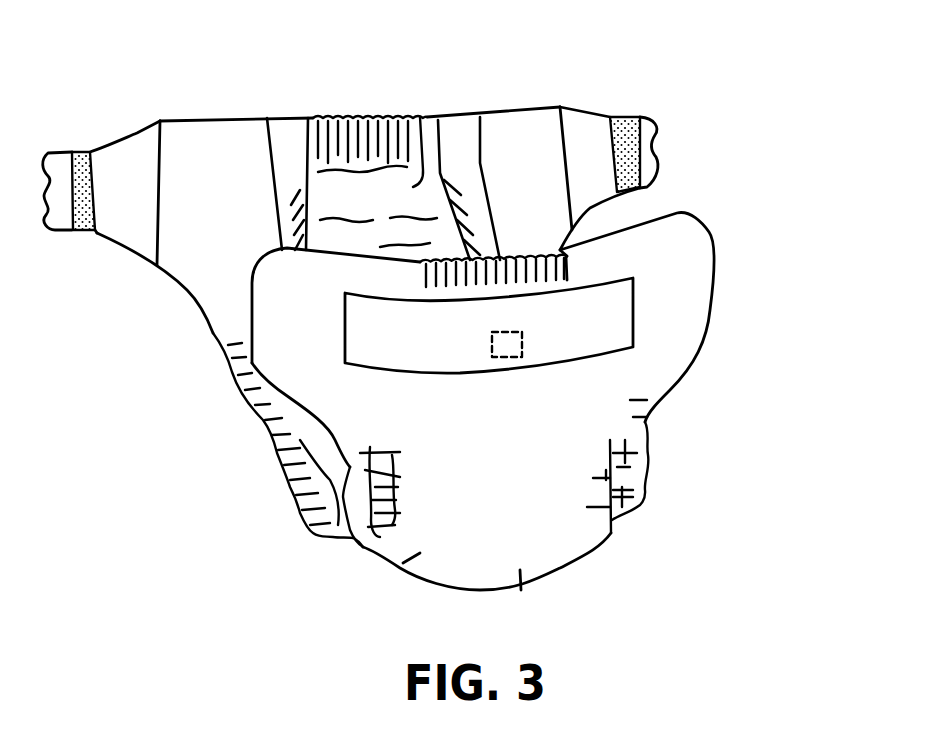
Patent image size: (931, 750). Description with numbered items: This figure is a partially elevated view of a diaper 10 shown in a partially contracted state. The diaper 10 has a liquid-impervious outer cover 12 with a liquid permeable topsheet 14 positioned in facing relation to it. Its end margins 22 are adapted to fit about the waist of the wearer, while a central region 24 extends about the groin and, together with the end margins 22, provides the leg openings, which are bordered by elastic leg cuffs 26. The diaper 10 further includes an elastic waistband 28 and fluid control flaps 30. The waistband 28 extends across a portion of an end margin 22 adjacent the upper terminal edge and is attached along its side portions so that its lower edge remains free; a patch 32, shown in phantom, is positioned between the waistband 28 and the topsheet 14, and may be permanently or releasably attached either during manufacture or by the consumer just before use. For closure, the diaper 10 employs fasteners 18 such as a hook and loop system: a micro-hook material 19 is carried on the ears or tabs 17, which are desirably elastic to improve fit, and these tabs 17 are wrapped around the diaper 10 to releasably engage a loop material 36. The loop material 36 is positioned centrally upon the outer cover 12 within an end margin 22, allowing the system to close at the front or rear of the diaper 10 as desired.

The diaper 10 is at (630, 78).
The outer cover 12 is at (682, 323).
The topsheet 14 is at (420, 117).
The ears or tabs 17 is at (137, 143).
The fasteners 18 is at (60, 153).
The micro-hook material 19 is at (633, 117).
The end margins 22 is at (722, 142).
The central region 24 is at (678, 482).
The elastic leg cuffs 26 is at (247, 410).
The elastic waistband 28 is at (350, 130).
The fluid control flaps 30 is at (285, 210).
The patch 32 is at (513, 350).
The loop material 36 is at (597, 347).